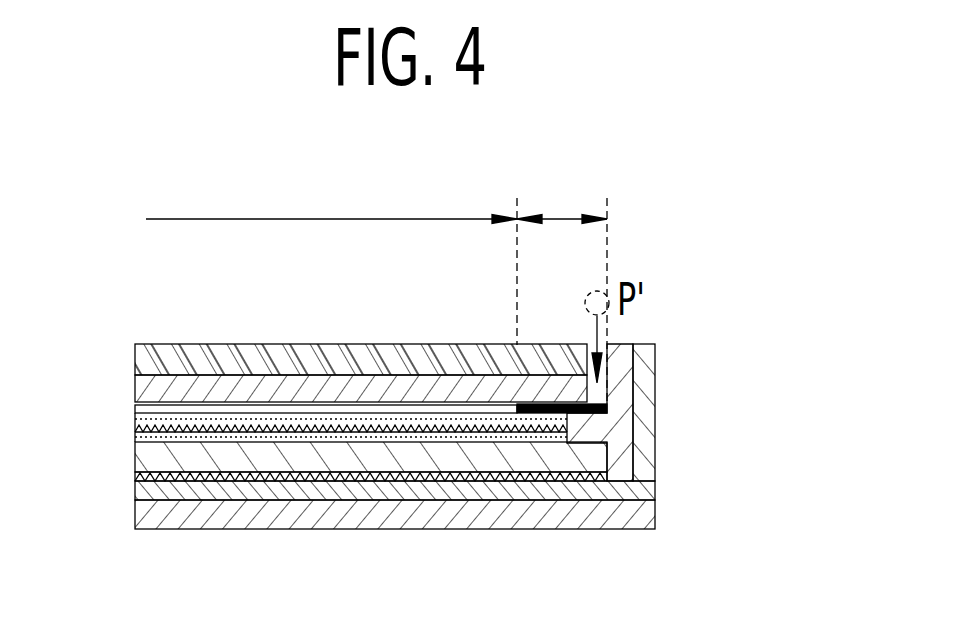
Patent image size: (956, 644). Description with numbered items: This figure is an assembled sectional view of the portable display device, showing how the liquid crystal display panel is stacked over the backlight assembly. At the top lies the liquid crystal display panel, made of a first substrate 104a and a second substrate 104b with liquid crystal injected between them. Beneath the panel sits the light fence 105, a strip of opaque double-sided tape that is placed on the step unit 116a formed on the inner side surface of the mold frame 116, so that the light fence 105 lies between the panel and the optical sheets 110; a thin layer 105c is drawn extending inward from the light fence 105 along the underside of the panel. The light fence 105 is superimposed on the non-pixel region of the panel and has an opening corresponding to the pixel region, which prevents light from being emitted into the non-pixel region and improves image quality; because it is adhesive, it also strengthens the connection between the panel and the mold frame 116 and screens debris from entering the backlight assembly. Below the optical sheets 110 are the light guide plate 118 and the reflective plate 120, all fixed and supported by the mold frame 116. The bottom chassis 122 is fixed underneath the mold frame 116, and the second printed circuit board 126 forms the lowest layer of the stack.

The first substrate 104a is at (255, 352).
The second substrate 104b is at (337, 390).
The conductive line 105c is at (427, 413).
The light fence 105 is at (540, 405).
The optical sheets 110 is at (303, 429).
The mold frame 116 is at (655, 373).
The step unit 116a is at (655, 420).
The light guide plate 118 is at (445, 453).
The reflective plate 120 is at (352, 483).
The bottom chassis 122 is at (655, 470).
The second printed circuit board 126 is at (655, 512).